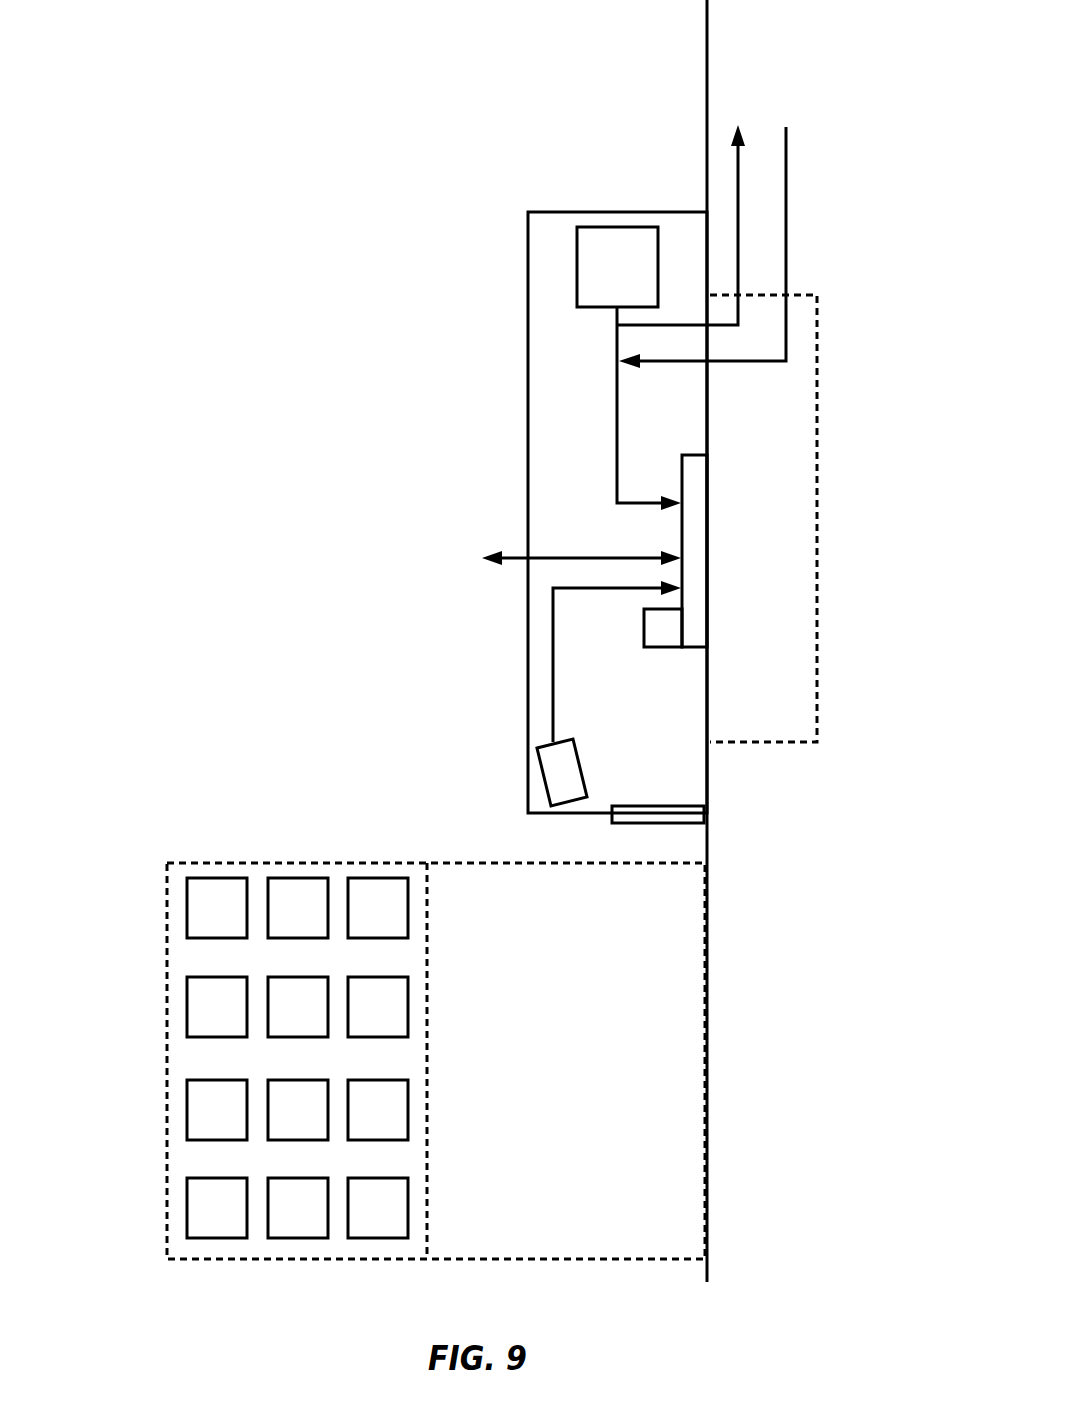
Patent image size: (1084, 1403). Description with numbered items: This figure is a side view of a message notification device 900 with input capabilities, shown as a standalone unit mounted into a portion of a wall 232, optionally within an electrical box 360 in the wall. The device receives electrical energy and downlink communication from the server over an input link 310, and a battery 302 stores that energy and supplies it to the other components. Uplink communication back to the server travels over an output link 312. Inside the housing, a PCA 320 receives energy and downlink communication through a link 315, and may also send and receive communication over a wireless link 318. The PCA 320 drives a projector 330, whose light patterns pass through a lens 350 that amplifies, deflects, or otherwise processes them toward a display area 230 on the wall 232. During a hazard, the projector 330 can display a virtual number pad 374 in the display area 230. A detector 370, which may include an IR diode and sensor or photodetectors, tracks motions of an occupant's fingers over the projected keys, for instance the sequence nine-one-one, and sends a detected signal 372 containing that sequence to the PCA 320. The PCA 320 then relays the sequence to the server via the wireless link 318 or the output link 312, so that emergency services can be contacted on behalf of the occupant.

The message notification device 900 is at (192, 68).
The wall 232 is at (707, 62).
The output link 312 is at (740, 190).
The input link 310 is at (786, 247).
The battery 302 is at (577, 283).
The electrical box 360 is at (817, 358).
The link 315 is at (617, 503).
The PCA 320 is at (710, 575).
The wireless link 318 is at (553, 558).
The projector 330 is at (683, 632).
The detected signal 372 is at (553, 716).
The detector 370 is at (547, 796).
The lens 350 is at (708, 817).
The display area 230 is at (428, 848).
The virtual number pad 374 is at (158, 878).